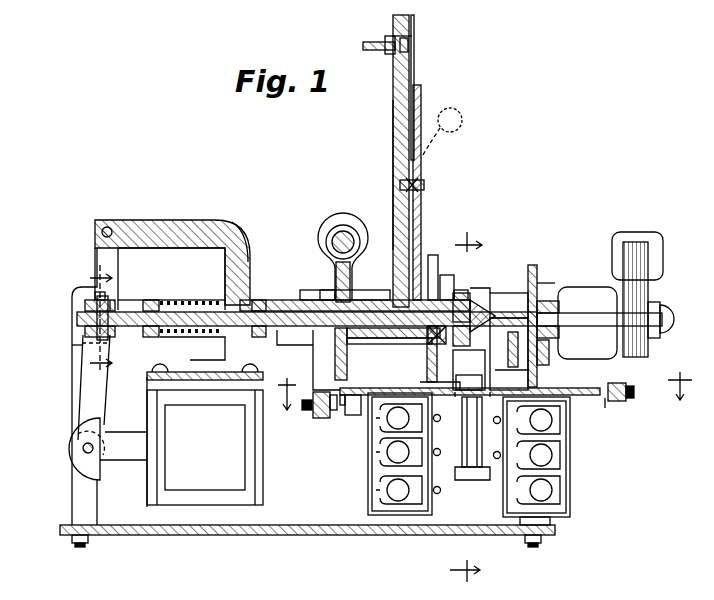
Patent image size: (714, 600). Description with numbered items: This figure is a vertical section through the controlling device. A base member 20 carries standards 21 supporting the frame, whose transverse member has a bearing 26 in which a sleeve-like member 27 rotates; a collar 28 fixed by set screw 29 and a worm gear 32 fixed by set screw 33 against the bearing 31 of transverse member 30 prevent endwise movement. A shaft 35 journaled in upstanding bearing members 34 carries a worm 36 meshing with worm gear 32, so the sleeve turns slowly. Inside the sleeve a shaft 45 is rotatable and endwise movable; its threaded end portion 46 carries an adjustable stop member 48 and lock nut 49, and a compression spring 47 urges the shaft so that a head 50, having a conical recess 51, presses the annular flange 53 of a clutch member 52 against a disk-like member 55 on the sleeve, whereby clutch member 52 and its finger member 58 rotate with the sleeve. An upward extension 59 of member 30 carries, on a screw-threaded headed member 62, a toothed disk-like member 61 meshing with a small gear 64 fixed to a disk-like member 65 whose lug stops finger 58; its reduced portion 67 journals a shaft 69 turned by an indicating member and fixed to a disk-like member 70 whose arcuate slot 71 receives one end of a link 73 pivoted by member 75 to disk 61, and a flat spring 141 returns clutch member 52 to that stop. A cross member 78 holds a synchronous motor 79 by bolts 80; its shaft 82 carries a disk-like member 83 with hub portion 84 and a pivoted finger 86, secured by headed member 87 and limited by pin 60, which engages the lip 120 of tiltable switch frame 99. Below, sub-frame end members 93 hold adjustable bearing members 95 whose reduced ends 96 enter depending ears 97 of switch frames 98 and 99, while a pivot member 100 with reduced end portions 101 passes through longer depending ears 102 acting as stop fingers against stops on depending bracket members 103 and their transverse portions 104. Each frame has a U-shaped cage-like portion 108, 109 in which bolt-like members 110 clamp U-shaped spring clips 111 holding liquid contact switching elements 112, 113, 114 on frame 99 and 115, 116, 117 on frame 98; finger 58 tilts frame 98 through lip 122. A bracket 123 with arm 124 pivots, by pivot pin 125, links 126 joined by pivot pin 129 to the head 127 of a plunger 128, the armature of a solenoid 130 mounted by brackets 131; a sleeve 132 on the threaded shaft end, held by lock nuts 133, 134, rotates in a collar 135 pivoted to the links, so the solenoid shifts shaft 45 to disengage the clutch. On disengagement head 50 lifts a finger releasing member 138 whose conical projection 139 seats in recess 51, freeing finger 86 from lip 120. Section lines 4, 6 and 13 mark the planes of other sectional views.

The section line 4- 4 is at (466, 412).
The section line 6- 6 is at (486, 391).
The section line 13- 13 is at (101, 322).
The base member 20 is at (248, 536).
The standards 21 is at (78, 505).
The bearing 26 is at (232, 272).
The sleeve-like member 27 is at (290, 310).
The collar 28 is at (260, 338).
The set screw 29 is at (262, 300).
The transverse member 30 is at (390, 340).
The bearing 31 is at (368, 300).
The worm gear 32 is at (336, 375).
The set screw 33 is at (352, 275).
The upstanding bearing members 34 is at (328, 212).
The shaft 35 is at (343, 226).
The worm 36 is at (333, 242).
The shaft 45 is at (314, 300).
The threaded end portion 46 is at (115, 330).
The compression spring 47 is at (185, 338).
The adjustable stop member 48 is at (152, 300).
The lock nut 49 is at (150, 338).
The head 50 is at (465, 293).
The conical recess 51 is at (478, 300).
The clutch member 52 is at (432, 354).
The annular flange 53 is at (469, 370).
The disk-like member 55 is at (412, 345).
The finger member 58 is at (436, 255).
The upward extension 59 is at (392, 200).
The pin 60 is at (505, 349).
The disk-like member 61 is at (423, 165).
The screw-threaded headed member 62 is at (424, 185).
The small gear 64 is at (432, 346).
The disk-like member 65 is at (446, 275).
The reduced portion 67 is at (393, 105).
The shaft 69 is at (375, 50).
The disk-like member 70 is at (392, 22).
The arcuate slot 71 is at (408, 48).
The link 73 is at (416, 70).
The screw-threaded headed member 75 is at (441, 133).
The cross member 78 is at (540, 285).
The motor 79 is at (588, 290).
The bolts 80 is at (635, 360).
The shaft 82 is at (556, 338).
The disk-like member 83 is at (535, 270).
The hub portion 84 is at (559, 308).
The finger 86 is at (548, 355).
The headed screw-threaded member 87 is at (508, 350).
The end members 93 is at (318, 418).
The adjustable bearing members 95 is at (303, 410).
The reduced ends 96 is at (332, 410).
The depending ears 97 is at (341, 405).
The tiltable switch frame 98 is at (354, 405).
The tiltable switch frame 99 is at (582, 392).
The pivot member 100 is at (467, 382).
The reduced end portions 101 is at (480, 437).
The depending ears 102 is at (470, 470).
The depending bracket members 103 is at (448, 495).
The transverse portions 104 is at (462, 482).
The U-shaped cage-like portion 108 is at (372, 500).
The U-shaped cage-like portion 109 is at (520, 540).
The bolt-like members 110 is at (460, 500).
The U-shaped spring clips 111 is at (385, 440).
The liquid contact switching element 112 is at (552, 490).
The liquid contact switching element 113 is at (552, 455).
The liquid contact switching element 114 is at (552, 422).
The liquid contact switching element 115 is at (388, 490).
The liquid contact switching element 116 is at (390, 455).
The liquid contact switching element 117 is at (388, 420).
The lip 120 is at (510, 376).
The lip 122 is at (440, 379).
The bracket 123 is at (247, 238).
The arm 124 is at (148, 232).
The pivot pin 125 is at (110, 228).
The links 126 is at (92, 250).
The head 127 is at (85, 440).
The plunger 128 is at (122, 452).
The pivot pin 129 is at (85, 447).
The solenoid 130 is at (192, 492).
The brackets 131 is at (240, 356).
The sleeve 132 is at (108, 300).
The lock nut 133 is at (85, 306).
The lock nut 134 is at (113, 303).
The collar 135 is at (98, 296).
The finger releasing member 138 is at (509, 305).
The conical projection 139 is at (485, 298).
The flat spring 141 is at (460, 290).